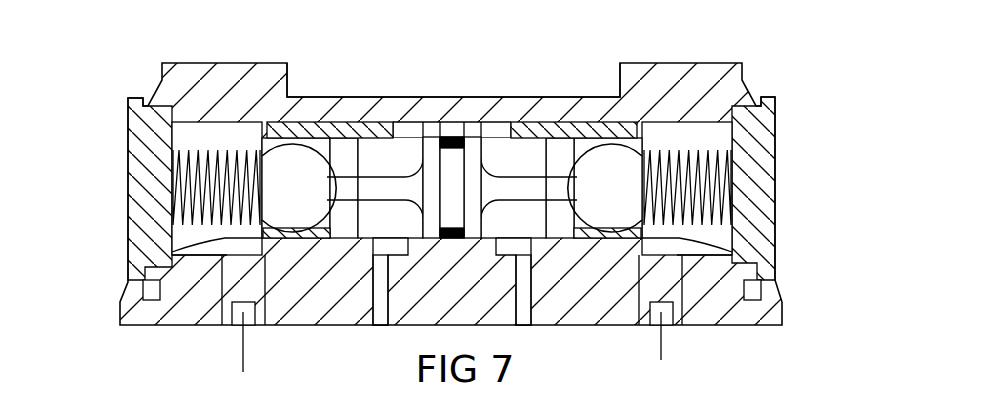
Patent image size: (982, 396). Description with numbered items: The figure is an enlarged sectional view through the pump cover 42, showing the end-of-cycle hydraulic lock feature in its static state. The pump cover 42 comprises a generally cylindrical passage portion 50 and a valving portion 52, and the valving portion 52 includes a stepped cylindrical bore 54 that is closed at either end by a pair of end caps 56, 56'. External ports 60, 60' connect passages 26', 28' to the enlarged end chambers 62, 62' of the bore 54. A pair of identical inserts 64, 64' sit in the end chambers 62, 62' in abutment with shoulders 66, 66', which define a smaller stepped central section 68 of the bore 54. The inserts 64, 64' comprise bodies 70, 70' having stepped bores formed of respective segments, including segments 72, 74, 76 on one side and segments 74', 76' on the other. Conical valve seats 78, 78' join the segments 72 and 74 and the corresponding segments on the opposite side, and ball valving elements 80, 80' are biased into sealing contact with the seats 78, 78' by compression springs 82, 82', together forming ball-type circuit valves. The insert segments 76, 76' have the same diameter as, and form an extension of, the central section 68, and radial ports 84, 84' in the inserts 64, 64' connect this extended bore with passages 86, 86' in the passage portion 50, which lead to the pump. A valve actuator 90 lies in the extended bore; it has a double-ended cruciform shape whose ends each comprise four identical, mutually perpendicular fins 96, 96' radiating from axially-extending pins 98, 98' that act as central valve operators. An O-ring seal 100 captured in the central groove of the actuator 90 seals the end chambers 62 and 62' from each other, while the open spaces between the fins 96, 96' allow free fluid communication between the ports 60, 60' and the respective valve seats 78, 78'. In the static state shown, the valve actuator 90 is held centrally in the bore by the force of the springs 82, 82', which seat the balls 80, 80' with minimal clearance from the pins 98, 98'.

The passage 26' is at (694, 337).
The passage 28' is at (217, 337).
The pump cover 42 is at (405, 93).
The passage portion 50 is at (137, 316).
The valving portion 52 is at (204, 76).
The stepped cylindrical bore 54 is at (587, 130).
The end cap 56 is at (784, 188).
The end cap 56' is at (121, 189).
The external port 60 is at (650, 318).
The external port 60' is at (264, 316).
The enlarged end chamber 62 is at (780, 176).
The enlarged end chamber 62' is at (121, 189).
The insert 64 is at (536, 78).
The insert 64' is at (369, 79).
The shoulder 66 is at (513, 187).
The shoulder 66' is at (390, 187).
The central section 68 is at (486, 137).
The body 70 is at (608, 250).
The body 70' is at (290, 196).
The bore segment 72 is at (643, 137).
The bore segment 74 is at (581, 82).
The bore segment 74' is at (330, 75).
The bore segment 76 is at (578, 150).
The bore segment 76' is at (358, 144).
The conical valve seat 78 is at (607, 215).
The conical valve seat 78' is at (296, 215).
The ball valving element 80 is at (733, 193).
The ball valving element 80' is at (169, 192).
The compression spring 82 is at (735, 187).
The compression spring 82' is at (165, 187).
The radial port 84 is at (529, 203).
The radial port 84' is at (375, 203).
The passage 86 is at (536, 309).
The passage 86' is at (371, 316).
The valve actuator 90 is at (432, 137).
The fin 96 is at (510, 295).
The fin 96' is at (398, 295).
The pin 98 is at (605, 188).
The pin 98' is at (299, 188).
The O-ring seal 100 is at (452, 239).